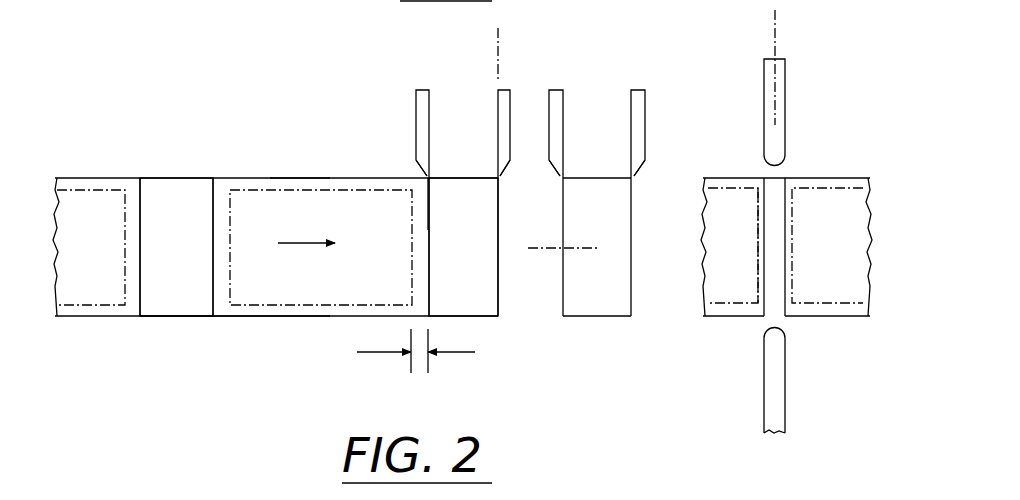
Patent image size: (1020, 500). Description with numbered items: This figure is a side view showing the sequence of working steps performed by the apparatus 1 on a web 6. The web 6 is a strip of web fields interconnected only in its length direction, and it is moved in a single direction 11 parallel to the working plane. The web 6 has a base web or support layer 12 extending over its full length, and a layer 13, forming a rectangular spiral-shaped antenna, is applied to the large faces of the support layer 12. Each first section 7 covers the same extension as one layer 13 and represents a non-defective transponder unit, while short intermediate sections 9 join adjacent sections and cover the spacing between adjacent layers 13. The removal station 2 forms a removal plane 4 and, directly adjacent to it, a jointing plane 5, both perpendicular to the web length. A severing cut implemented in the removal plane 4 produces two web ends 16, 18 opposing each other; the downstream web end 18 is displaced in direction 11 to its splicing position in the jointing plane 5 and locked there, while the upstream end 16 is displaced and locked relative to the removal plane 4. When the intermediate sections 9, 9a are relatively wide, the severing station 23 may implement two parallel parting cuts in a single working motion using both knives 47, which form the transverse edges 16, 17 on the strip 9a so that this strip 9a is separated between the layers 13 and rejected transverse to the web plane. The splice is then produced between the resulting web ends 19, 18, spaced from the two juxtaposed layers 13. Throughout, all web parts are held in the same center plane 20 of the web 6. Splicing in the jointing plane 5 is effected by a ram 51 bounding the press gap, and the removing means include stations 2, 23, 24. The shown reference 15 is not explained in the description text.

The apparatus 1 is at (407, 110).
The removal station 2 is at (581, 264).
The removal plane 4 is at (498, 58).
The jointing plane 5 is at (775, 40).
The web 6 is at (163, 160).
The first sections 7 is at (272, 310).
The intermediate sections 9 is at (775, 278).
The strip 9a is at (170, 305).
The direction 11 is at (306, 227).
The support layer 12 is at (55, 268).
The layer 13 is at (125, 240).
The transverse lines 15 is at (270, 178).
The upstream web end 16 is at (498, 225).
The transverse edge 17 is at (428, 215).
The downstream web end 18 is at (762, 225).
The web end 19 is at (428, 225).
The center plane 20 is at (590, 245).
The severing station 23 is at (455, 88).
The station 24 is at (776, 219).
The knife 47 is at (498, 160).
The ram 51 is at (770, 155).